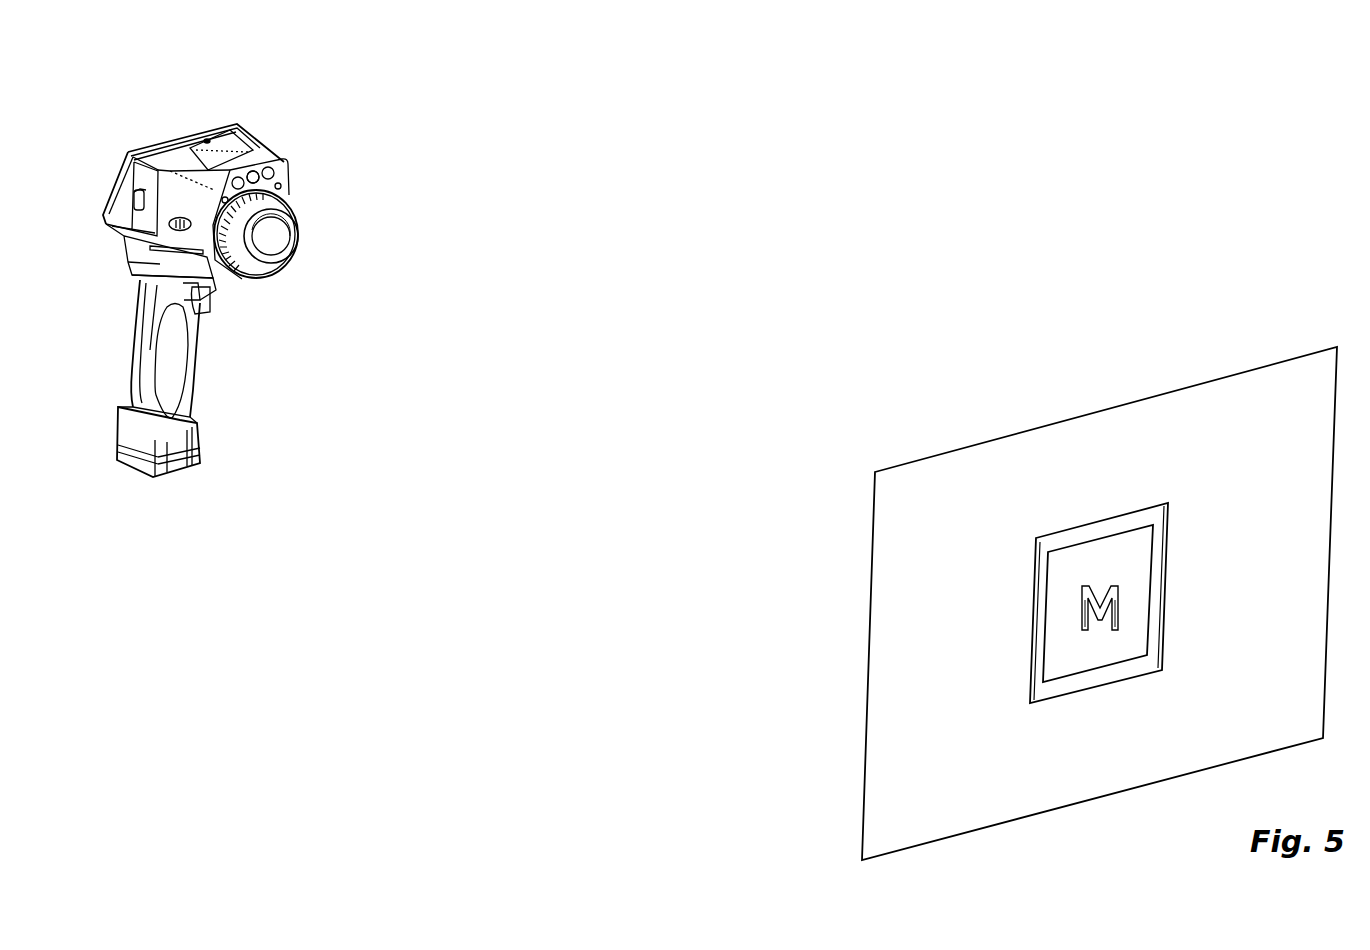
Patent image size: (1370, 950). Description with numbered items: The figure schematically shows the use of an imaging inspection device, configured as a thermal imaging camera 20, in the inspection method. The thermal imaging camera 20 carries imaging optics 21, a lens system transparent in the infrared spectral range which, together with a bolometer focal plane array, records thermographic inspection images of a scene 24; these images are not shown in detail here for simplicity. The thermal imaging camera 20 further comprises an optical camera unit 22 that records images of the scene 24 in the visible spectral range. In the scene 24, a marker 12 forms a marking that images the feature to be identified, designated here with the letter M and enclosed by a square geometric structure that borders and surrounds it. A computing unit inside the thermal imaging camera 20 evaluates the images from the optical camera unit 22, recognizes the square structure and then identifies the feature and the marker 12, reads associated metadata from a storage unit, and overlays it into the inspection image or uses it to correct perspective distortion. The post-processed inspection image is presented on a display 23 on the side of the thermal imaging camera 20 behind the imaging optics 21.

The marker 12 is at (1102, 652).
The thermal imaging camera 20 is at (476, 151).
The imaging optics 21 is at (277, 238).
The optical camera unit 22 is at (256, 171).
The display 23 is at (160, 131).
The scene 24 is at (1184, 410).